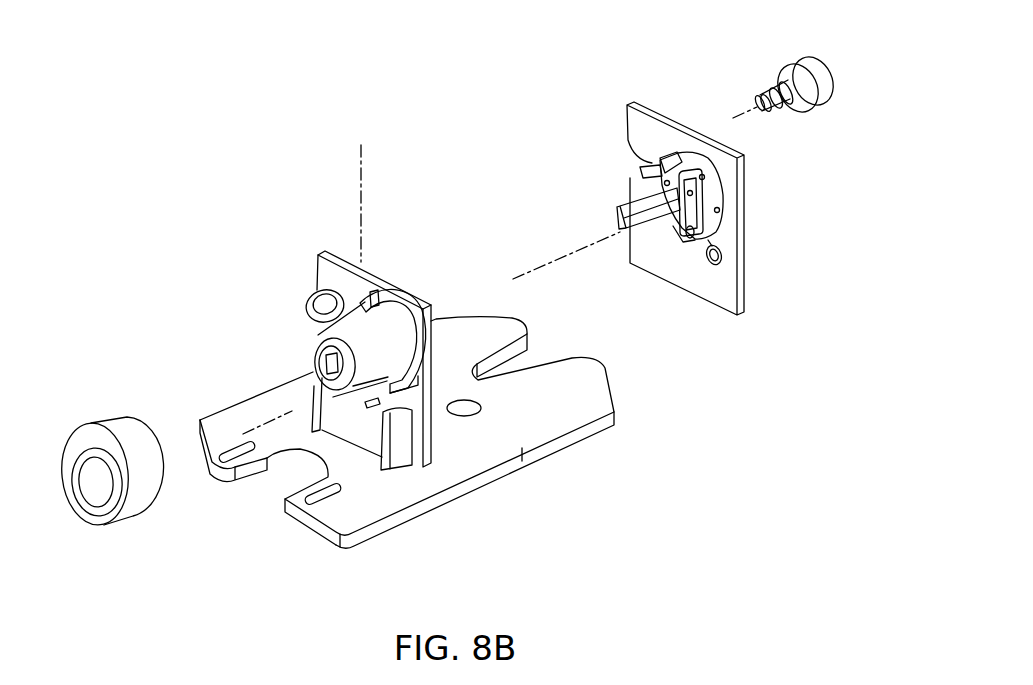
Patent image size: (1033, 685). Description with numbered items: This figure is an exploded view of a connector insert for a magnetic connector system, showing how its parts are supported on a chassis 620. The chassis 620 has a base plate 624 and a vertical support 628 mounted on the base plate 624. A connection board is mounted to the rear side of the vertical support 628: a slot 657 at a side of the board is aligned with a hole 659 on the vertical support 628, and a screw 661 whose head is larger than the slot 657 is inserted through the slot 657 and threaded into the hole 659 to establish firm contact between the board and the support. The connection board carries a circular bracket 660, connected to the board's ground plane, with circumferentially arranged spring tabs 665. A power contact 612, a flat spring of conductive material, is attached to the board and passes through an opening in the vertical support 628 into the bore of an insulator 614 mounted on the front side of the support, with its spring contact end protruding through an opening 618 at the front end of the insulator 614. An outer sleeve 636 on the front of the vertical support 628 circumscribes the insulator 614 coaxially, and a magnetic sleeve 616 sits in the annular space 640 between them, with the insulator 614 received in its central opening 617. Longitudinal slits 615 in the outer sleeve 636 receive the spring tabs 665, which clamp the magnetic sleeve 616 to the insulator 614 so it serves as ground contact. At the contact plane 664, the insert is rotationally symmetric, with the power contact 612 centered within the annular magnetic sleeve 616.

The power contact 612 is at (650, 273).
The insulator 614 is at (321, 312).
The longitudinal slits 615 is at (375, 297).
The magnetic sleeve 616 is at (105, 423).
The central opening 617 is at (102, 494).
The opening 618 is at (328, 362).
The chassis 620 is at (562, 437).
The base plate 624 is at (594, 425).
The vertical support 628 is at (325, 252).
The outer sleeve 636 is at (398, 335).
The annular space 640 is at (327, 334).
The slot 657 is at (641, 170).
The hole 659 is at (343, 337).
The circular bracket 660 is at (718, 194).
The screw 661 is at (804, 62).
The contact plane 664 is at (718, 239).
The spring tabs 665 is at (683, 157).